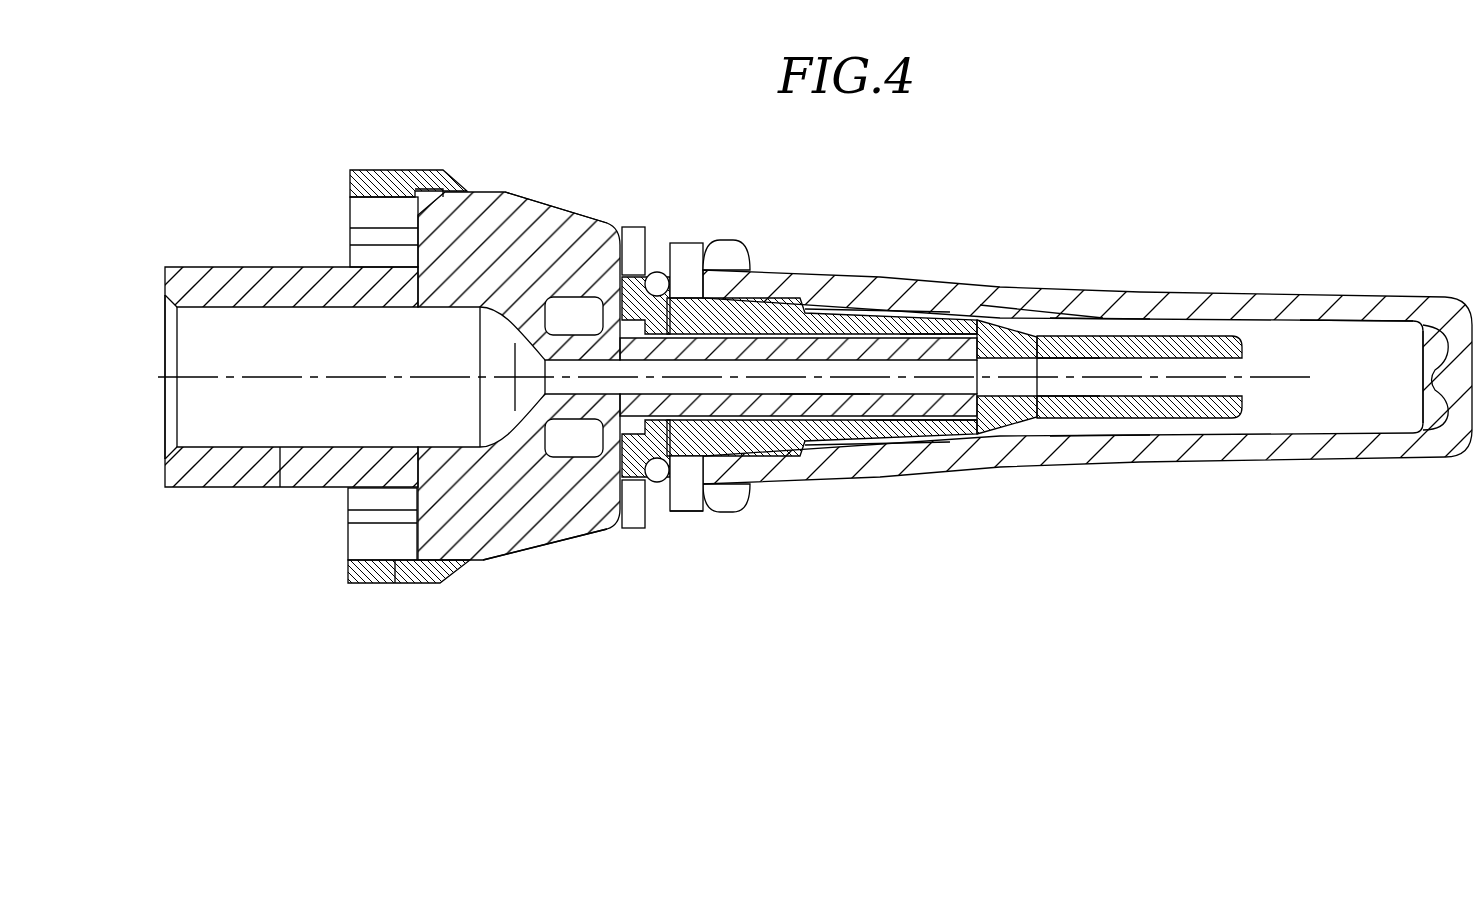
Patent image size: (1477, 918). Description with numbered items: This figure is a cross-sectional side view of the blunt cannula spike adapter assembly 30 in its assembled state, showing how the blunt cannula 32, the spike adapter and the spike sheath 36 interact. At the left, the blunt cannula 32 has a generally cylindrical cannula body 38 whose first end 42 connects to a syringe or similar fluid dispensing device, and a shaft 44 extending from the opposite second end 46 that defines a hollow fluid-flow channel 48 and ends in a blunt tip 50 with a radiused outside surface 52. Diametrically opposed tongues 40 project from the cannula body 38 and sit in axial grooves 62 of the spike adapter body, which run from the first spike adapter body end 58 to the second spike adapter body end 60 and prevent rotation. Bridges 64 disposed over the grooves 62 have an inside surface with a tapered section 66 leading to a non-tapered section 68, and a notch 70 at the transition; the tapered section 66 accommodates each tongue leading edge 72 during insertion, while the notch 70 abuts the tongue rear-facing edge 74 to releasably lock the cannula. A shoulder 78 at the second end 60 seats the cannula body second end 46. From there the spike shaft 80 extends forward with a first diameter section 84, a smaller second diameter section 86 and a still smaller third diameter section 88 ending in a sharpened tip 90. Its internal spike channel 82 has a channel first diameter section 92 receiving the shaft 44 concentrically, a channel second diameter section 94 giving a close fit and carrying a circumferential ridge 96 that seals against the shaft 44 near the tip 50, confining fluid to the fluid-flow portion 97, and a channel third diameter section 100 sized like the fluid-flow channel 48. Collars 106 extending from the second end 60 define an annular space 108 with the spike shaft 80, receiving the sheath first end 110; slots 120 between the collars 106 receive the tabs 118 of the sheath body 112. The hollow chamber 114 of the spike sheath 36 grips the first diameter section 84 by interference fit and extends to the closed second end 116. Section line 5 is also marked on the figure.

The blunt cannula spike adapter assembly 30 is at (940, 199).
The cannula body 38 is at (248, 278).
The first end 42 is at (163, 488).
The blunt cannula 32 is at (280, 494).
The tongues 40 is at (520, 222).
The radiused outside surface 52 is at (1000, 452).
The tongue leading edge 72 is at (560, 192).
The non-tapered section 68 is at (455, 560).
The grooves 62 is at (380, 210).
The bridges 64 is at (392, 174).
The notch 70 is at (438, 170).
The tapered section 66 is at (378, 558).
The first spike adapter body end 58 is at (352, 562).
The tongue rear-facing edge 74 is at (393, 566).
The second end 46 is at (640, 250).
The annular space 108 is at (660, 277).
The tabs 118 is at (660, 272).
The channel first diameter section 92 is at (688, 275).
The collars 106 is at (730, 242).
The spike sheath 36 is at (1283, 460).
The closed second end 116 is at (1475, 330).
The sharpened tip 90 is at (1250, 330).
The hollow chamber 114 is at (1362, 330).
The spike shaft third diameter section 88 is at (1150, 440).
The sheath body 112 is at (1080, 456).
The spike channel 82 is at (888, 335).
The spike shaft 80 is at (853, 314).
The spike shaft second diameter section 86 is at (940, 445).
The fluid-flow channel 48 is at (895, 420).
The channel second diameter section 94 is at (830, 410).
The shaft 44 is at (770, 336).
The circumferential ridge 96 is at (1000, 330).
The channel third diameter section 100 is at (1150, 340).
The blunt tip 50 is at (1062, 345).
The fluid-flow portion 97 is at (1082, 312).
The section line 5 is at (1080, 367).
The shoulder 78 is at (628, 512).
The first end 110 is at (700, 520).
The second spike adapter body end 60 is at (682, 510).
The slots 120 is at (690, 508).
The spike shaft first diameter section 84 is at (728, 500).